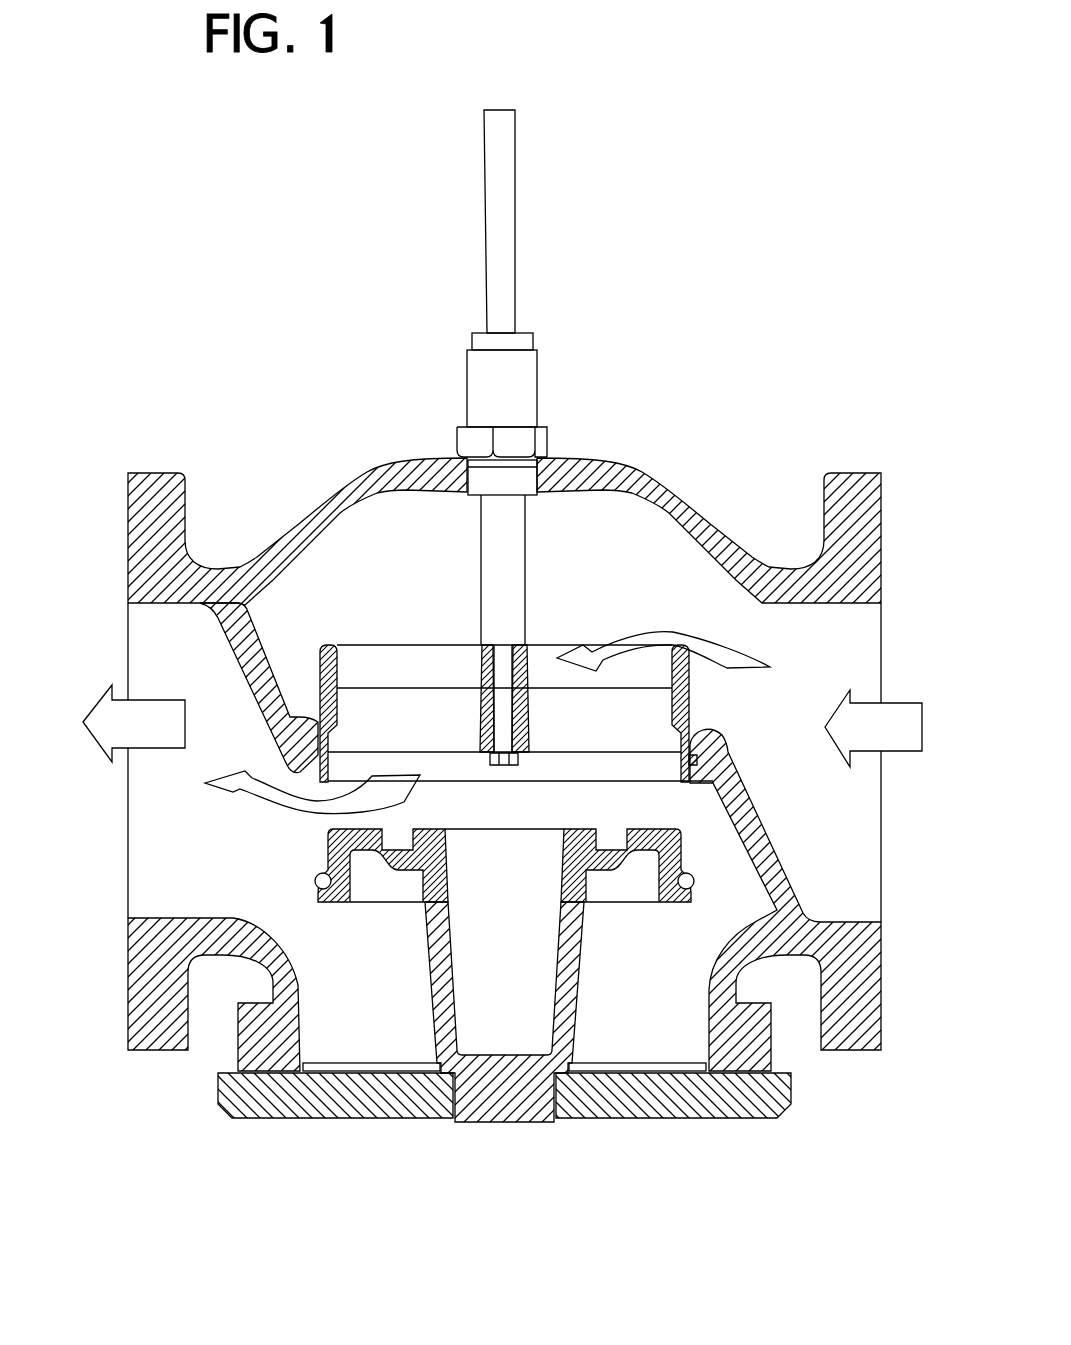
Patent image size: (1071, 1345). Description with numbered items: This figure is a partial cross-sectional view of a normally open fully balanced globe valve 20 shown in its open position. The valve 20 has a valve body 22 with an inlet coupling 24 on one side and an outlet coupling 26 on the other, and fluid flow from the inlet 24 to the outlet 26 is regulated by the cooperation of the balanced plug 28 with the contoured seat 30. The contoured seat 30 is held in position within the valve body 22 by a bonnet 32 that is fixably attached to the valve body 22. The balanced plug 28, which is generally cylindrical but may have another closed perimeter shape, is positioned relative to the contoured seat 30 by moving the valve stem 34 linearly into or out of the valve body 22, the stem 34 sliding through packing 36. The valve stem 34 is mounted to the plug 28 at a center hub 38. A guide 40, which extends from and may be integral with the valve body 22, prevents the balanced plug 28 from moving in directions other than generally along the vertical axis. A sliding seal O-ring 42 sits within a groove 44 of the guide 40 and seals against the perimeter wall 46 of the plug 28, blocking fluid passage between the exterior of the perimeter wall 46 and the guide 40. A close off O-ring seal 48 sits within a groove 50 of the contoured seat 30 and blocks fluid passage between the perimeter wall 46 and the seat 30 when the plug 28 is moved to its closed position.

The globe valve 20 is at (183, 291).
The valve body 22 is at (684, 512).
The inlet coupling 24 is at (881, 632).
The outlet coupling 26 is at (128, 632).
The balanced plug 28 is at (220, 623).
The contoured seat 30 is at (430, 954).
The bonnet 32 is at (610, 1098).
The valve stem 34 is at (517, 142).
The packing 36 is at (531, 390).
The center hub 38 is at (478, 707).
The guide 40 is at (305, 772).
The sliding seal O-ring 42 is at (318, 806).
The groove 44 is at (307, 770).
The perimeter wall 46 is at (317, 712).
The close off O-ring seal 48 is at (318, 880).
The groove 50 is at (325, 892).